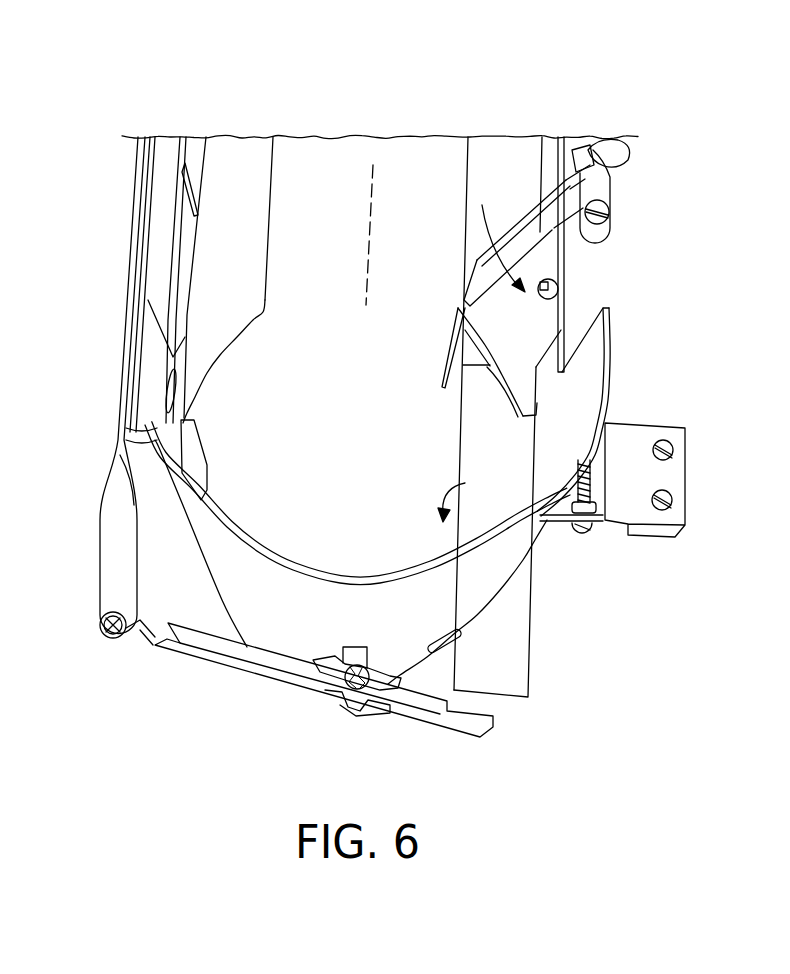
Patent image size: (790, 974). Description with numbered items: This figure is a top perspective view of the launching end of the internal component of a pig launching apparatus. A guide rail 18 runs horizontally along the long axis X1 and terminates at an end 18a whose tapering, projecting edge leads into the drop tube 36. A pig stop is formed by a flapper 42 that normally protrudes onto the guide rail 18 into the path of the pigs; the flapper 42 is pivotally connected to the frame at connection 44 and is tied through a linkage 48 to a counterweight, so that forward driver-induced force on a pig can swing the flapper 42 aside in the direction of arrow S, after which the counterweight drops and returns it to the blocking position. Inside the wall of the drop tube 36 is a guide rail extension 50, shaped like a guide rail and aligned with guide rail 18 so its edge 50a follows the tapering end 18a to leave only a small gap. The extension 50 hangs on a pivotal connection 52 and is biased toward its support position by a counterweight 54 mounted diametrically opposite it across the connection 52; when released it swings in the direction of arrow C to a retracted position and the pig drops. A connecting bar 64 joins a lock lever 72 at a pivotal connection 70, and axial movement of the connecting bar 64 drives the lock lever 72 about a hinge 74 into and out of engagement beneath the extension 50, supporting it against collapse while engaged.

The guide rail 18 is at (243, 160).
The end of the guide rail 18a is at (455, 335).
The drop tube 36 is at (612, 362).
The flapper 42 is at (470, 268).
The connection 44 is at (622, 147).
The linkage 48 is at (603, 192).
The guide rail extension 50 is at (462, 455).
The edge of the guide rail extension 50a is at (442, 387).
The pivotal connection 52 is at (586, 535).
The counterweight 54 is at (655, 538).
The connecting bar 64 is at (100, 528).
The pivotal connection 70 is at (100, 624).
The lock lever 72 is at (448, 722).
The hinge 74 is at (343, 680).
The long axis X1 is at (395, 180).
The arrow S is at (503, 261).
The arrow C is at (440, 502).